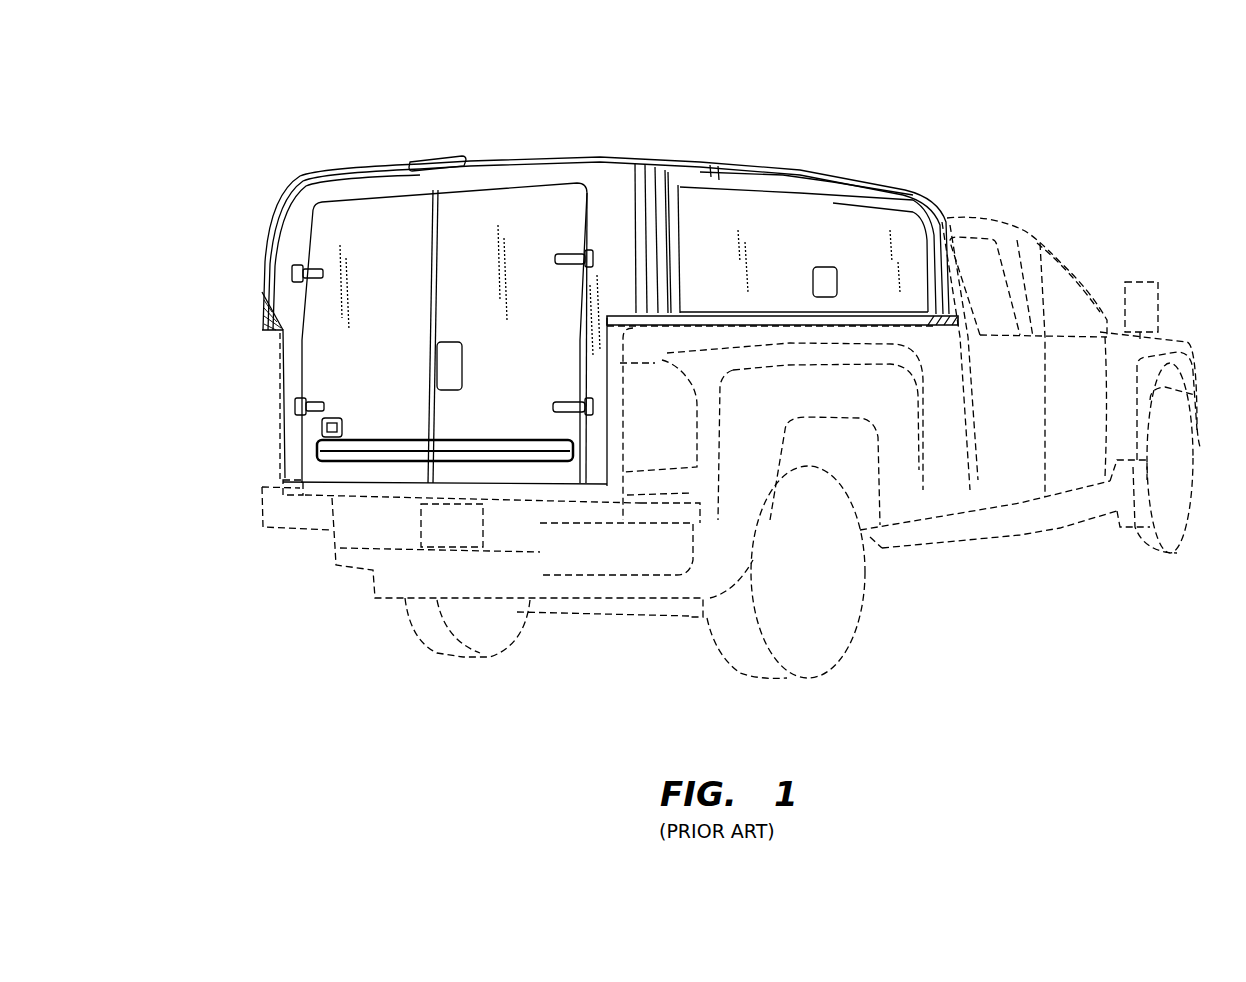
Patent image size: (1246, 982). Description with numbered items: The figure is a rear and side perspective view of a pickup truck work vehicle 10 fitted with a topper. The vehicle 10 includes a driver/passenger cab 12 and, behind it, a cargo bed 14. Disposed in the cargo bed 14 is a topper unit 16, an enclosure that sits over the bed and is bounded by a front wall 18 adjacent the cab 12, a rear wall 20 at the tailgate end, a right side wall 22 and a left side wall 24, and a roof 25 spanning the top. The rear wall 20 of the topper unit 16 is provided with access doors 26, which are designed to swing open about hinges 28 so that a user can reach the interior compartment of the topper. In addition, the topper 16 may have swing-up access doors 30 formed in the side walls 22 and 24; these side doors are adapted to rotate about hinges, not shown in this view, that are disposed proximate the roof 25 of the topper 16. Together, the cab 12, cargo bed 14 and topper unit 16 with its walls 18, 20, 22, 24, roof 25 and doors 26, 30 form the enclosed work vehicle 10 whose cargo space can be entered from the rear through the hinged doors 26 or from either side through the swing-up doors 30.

The pickup truck work vehicle 10 is at (1058, 537).
The driver/passenger cab 12 is at (1023, 232).
The cargo bed 14 is at (820, 402).
The topper unit 16 is at (600, 268).
The front wall 18 is at (946, 211).
The rear wall 20 is at (603, 180).
The right side wall 22 is at (657, 260).
The left side wall 24 is at (280, 196).
The roof 25 is at (758, 166).
The access doors 26 is at (392, 305).
The hinges 28 is at (296, 400).
The swing-up access doors 30 is at (860, 238).